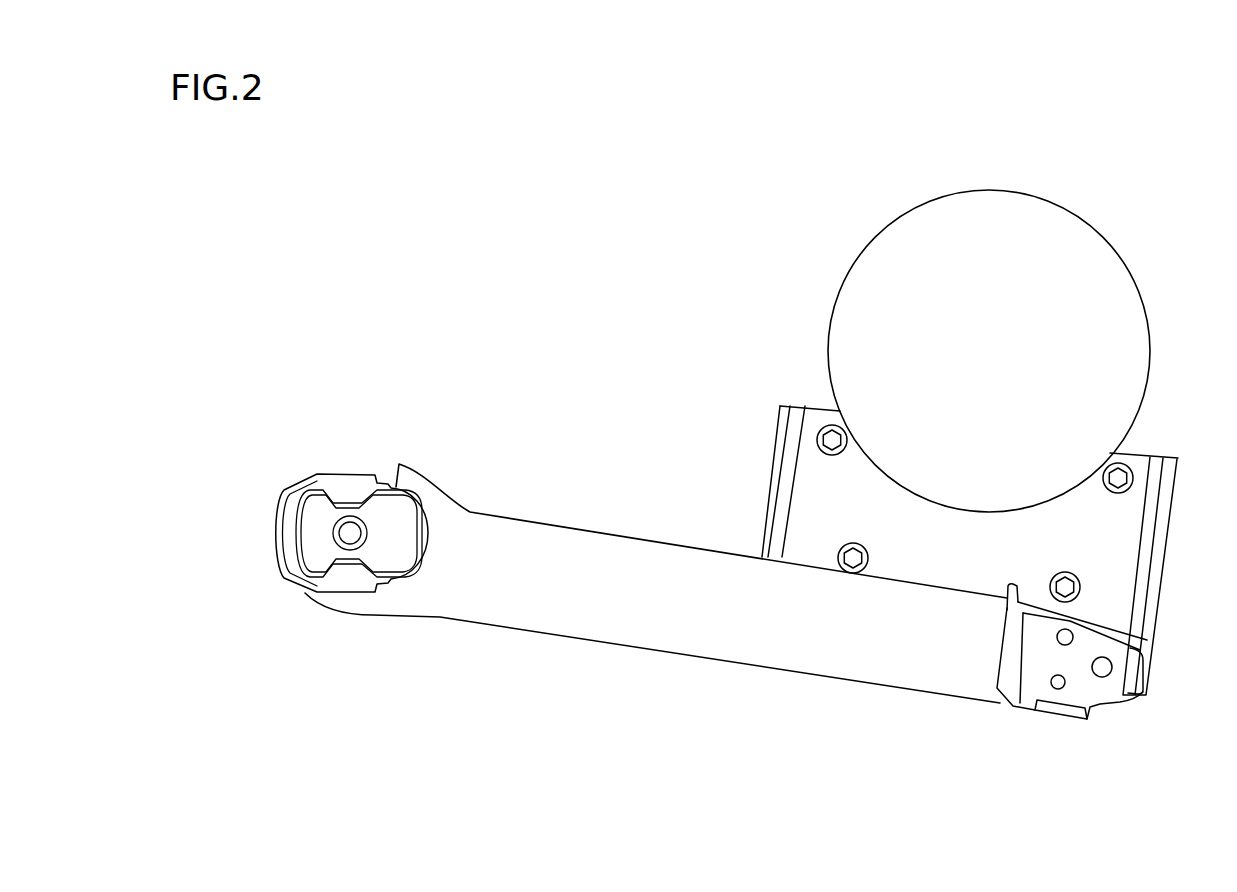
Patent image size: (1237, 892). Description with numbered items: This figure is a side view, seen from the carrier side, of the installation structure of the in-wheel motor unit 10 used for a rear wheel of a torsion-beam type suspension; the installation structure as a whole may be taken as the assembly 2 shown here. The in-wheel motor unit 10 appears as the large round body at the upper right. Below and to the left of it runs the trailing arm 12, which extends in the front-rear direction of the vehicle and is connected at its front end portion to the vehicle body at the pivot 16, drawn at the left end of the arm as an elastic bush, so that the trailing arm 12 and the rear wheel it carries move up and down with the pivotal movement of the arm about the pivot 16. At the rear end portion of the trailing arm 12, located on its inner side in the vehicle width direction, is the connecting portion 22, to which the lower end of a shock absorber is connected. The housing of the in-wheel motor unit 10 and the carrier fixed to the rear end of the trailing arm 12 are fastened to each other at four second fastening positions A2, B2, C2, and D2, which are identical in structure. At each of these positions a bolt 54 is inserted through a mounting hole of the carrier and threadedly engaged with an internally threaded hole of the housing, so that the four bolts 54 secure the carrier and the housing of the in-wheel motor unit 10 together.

The mounting bracket 2 is at (1160, 493).
The in-wheel motor unit 10 is at (1158, 217).
The trailing arm 12 is at (980, 678).
The pivot 16 is at (278, 500).
The connecting portion 22 is at (1107, 696).
The bolt 54 is at (829, 437).
The second fastening position A2 is at (1146, 433).
The second fastening position B2 is at (1122, 550).
The second fastening position C2 is at (823, 390).
The second fastening position D2 is at (818, 505).